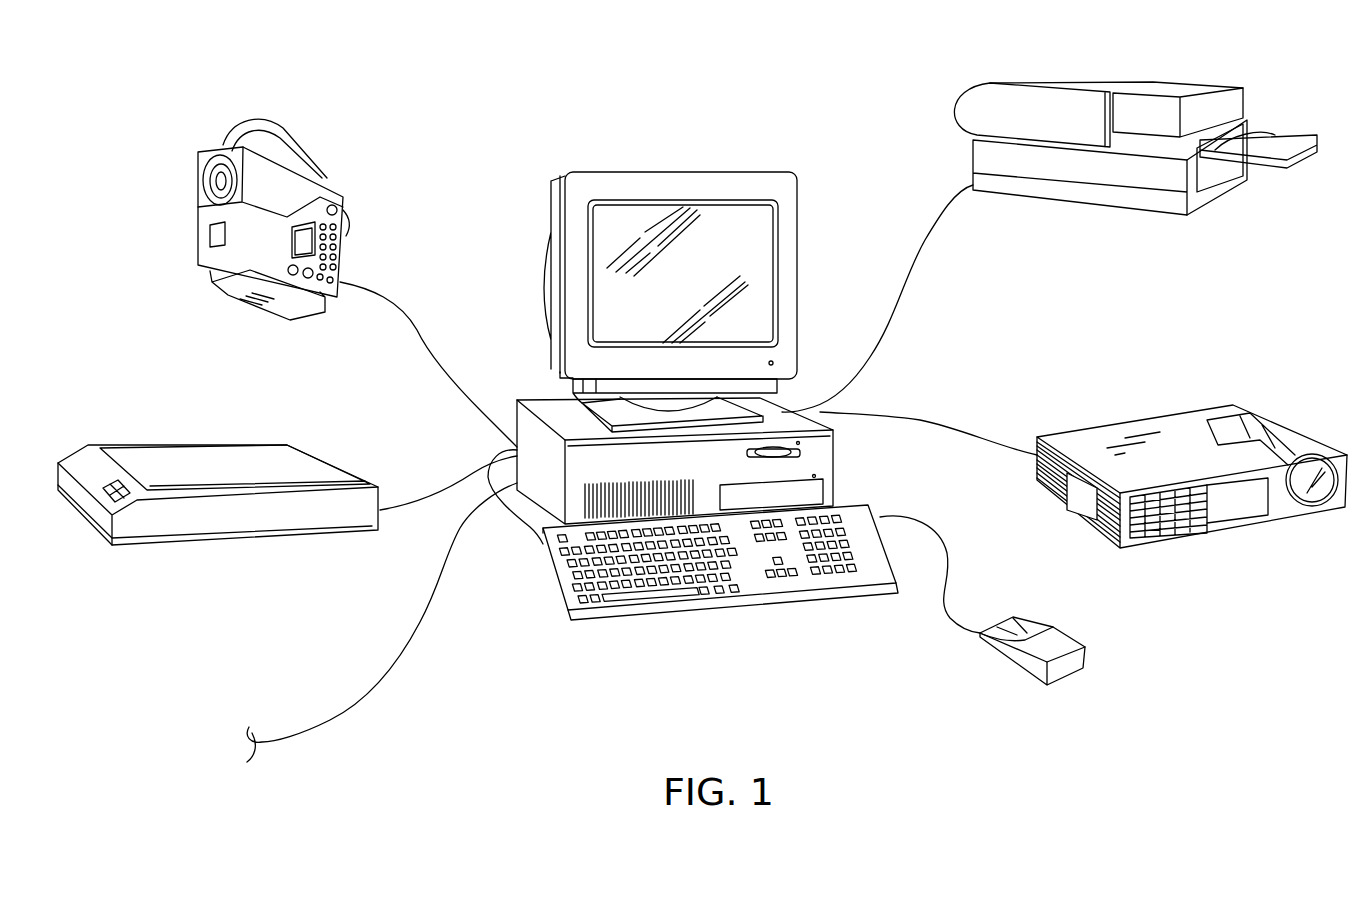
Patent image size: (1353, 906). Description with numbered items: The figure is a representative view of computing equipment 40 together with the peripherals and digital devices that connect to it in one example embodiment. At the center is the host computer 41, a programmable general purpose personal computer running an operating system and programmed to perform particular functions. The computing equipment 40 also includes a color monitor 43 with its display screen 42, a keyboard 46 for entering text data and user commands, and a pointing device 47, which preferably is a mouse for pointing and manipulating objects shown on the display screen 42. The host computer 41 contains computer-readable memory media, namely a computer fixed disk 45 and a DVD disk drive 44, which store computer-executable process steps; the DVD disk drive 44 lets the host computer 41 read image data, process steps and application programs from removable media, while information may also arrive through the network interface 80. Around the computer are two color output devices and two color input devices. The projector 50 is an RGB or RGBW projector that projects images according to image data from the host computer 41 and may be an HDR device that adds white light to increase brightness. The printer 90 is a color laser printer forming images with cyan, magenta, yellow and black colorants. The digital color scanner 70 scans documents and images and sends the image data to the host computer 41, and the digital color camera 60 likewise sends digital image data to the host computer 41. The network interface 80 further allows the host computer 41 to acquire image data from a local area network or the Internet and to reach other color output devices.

The computing equipment 40 is at (770, 138).
The host computer 41 is at (701, 427).
The display screen 42 is at (753, 283).
The color monitor 43 is at (704, 270).
The DVD disk drive 44 is at (800, 451).
The computer fixed disk 45 is at (817, 488).
The keyboard 46 is at (653, 593).
The pointing device 47 is at (1063, 672).
The projector 50 is at (1125, 402).
The digital color camera 60 is at (345, 197).
The digital color scanner 70 is at (270, 538).
The network interface 80 is at (327, 766).
The printer 90 is at (1033, 77).